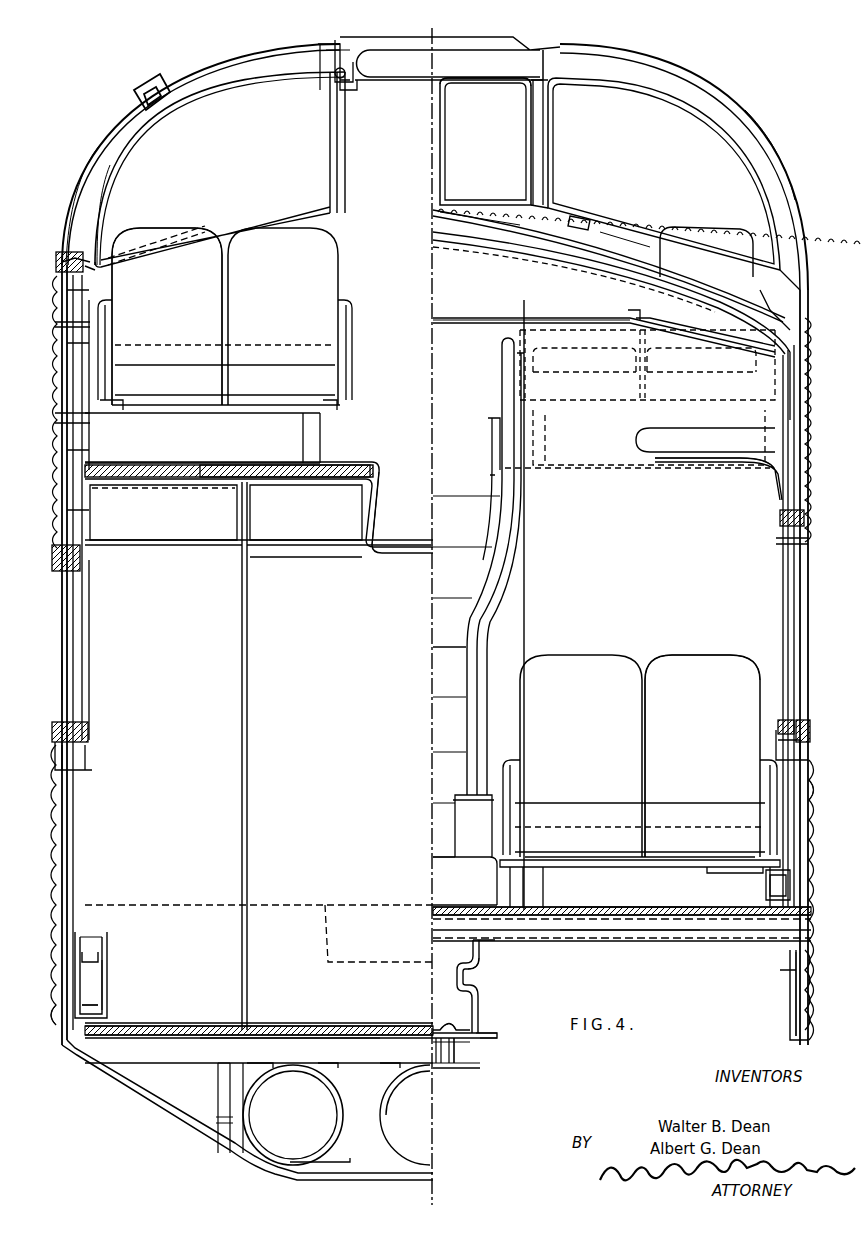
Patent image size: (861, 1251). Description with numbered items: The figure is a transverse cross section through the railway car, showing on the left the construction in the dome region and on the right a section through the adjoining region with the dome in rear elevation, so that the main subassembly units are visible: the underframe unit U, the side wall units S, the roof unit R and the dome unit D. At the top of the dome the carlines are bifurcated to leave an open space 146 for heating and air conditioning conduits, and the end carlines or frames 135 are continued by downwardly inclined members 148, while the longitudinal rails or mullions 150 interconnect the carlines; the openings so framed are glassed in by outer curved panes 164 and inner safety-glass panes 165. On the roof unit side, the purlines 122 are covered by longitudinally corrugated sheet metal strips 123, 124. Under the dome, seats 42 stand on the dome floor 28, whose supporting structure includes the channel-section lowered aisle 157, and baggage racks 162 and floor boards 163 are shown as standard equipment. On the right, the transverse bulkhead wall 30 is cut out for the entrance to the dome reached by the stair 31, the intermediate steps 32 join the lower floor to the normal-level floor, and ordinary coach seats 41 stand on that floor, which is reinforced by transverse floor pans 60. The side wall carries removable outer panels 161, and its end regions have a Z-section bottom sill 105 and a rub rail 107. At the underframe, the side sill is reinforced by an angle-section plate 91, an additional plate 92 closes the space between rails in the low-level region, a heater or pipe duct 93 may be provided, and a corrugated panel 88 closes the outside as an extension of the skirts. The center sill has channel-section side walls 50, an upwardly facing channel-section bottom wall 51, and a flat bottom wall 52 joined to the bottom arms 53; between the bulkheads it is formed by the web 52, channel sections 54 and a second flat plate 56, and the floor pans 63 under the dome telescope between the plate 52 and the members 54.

The open space 146 is at (415, 60).
The dome unit D is at (652, 66).
The longitudinal rails or mullions 150 is at (146, 90).
The outer curved panes 164 is at (95, 150).
The inner safety-glass panes 165 is at (95, 172).
The downwardly inclined members 148 is at (337, 136).
The end carlines or frames 135 is at (772, 153).
The roof unit R is at (465, 220).
The corrugated sheet metal strip 124 is at (492, 190).
The purlines 122 is at (584, 218).
The corrugated sheet metal strip 123 is at (628, 240).
The seats 42 is at (320, 290).
The floor for the dome 28 is at (345, 465).
The channel-section lowered aisle 157 is at (378, 530).
The baggage racks 162 is at (718, 455).
The transverse bulkhead wall 30 is at (642, 586).
The intermediate steps 32 is at (327, 743).
The stair 31 is at (440, 670).
The coach seats 41 is at (648, 662).
The side wall unit S is at (58, 680).
The removable outer panels 161 is at (806, 780).
The bottom sill 105 is at (792, 886).
The floor boards 163 is at (648, 907).
The transverse floor pans 60 is at (650, 930).
The rub rail 107 is at (812, 940).
The angle-section plate 91 is at (104, 935).
The heater or pipe duct 93 is at (106, 985).
The additional plate 92 is at (104, 1009).
The corrugated panel 88 is at (58, 1010).
The floor pans 63 is at (290, 1048).
The channel section side walls 50 is at (477, 975).
The underframe unit U is at (485, 1016).
The channel section bottom wall 51 is at (452, 1024).
The bottom arms 53 is at (490, 1030).
The flat bottom wall 52 is at (484, 1038).
The channel sections 54 is at (454, 1056).
The second flat plate 56 is at (448, 1070).